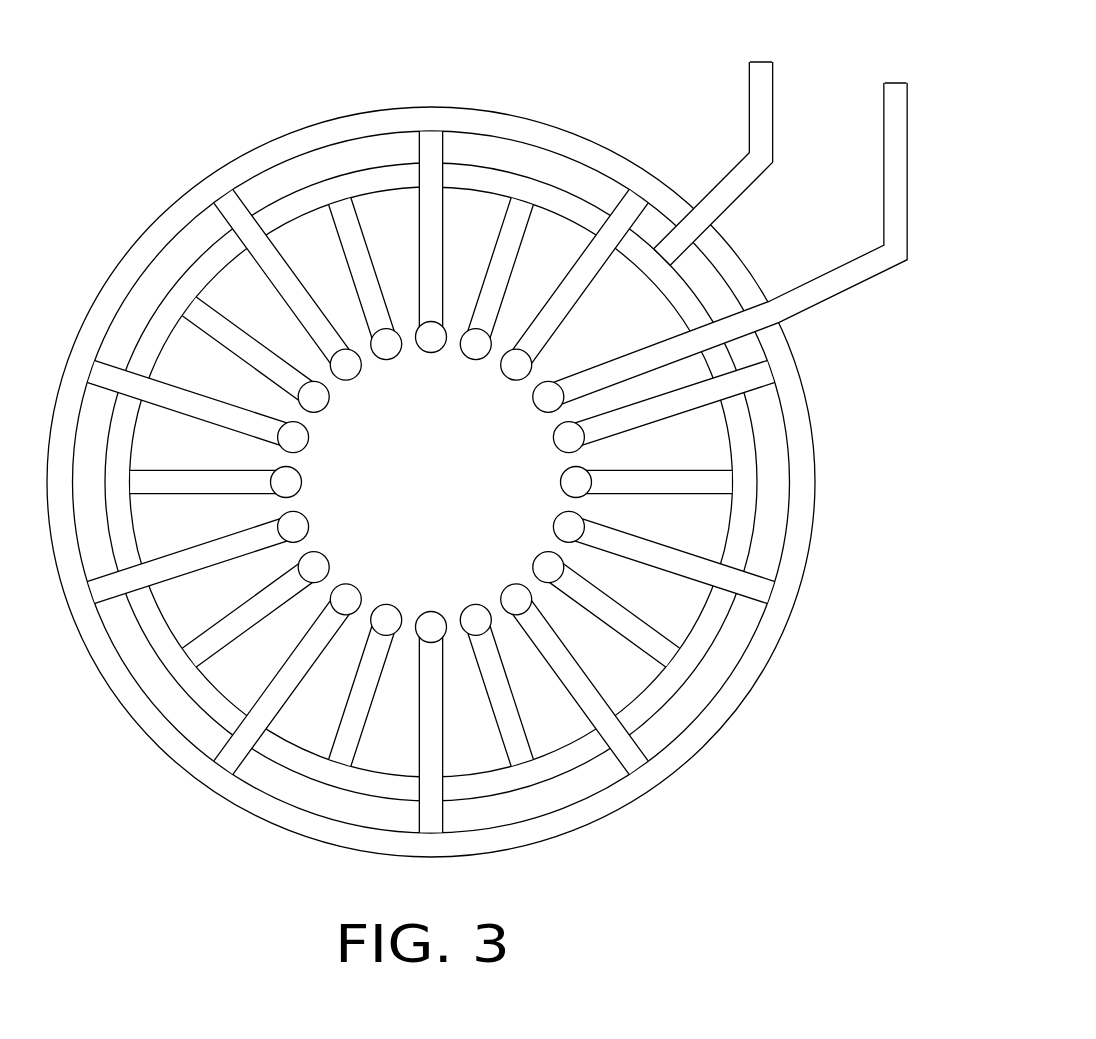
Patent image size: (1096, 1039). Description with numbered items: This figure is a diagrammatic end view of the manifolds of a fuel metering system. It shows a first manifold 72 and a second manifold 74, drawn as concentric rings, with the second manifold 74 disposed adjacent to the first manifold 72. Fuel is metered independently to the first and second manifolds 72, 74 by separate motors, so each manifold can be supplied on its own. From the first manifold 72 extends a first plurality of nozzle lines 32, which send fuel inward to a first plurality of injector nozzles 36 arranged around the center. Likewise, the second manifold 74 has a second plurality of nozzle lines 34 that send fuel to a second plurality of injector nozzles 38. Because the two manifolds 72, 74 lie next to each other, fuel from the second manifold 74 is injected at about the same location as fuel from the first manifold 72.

The first manifold 72 is at (777, 647).
The second manifold 74 is at (160, 660).
The second plurality of nozzle lines 34 is at (207, 660).
The first plurality of nozzle lines 32 is at (702, 556).
The first plurality of injector nozzles 36 is at (569, 527).
The second plurality of injector nozzles 38 is at (315, 562).